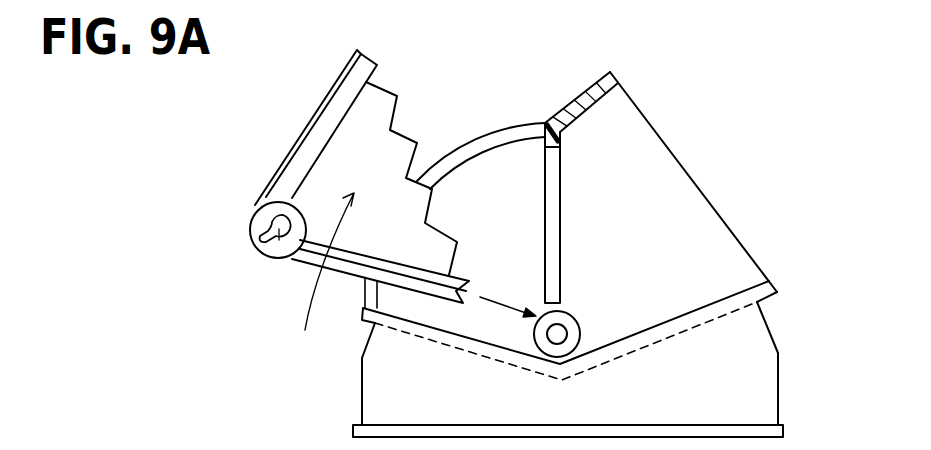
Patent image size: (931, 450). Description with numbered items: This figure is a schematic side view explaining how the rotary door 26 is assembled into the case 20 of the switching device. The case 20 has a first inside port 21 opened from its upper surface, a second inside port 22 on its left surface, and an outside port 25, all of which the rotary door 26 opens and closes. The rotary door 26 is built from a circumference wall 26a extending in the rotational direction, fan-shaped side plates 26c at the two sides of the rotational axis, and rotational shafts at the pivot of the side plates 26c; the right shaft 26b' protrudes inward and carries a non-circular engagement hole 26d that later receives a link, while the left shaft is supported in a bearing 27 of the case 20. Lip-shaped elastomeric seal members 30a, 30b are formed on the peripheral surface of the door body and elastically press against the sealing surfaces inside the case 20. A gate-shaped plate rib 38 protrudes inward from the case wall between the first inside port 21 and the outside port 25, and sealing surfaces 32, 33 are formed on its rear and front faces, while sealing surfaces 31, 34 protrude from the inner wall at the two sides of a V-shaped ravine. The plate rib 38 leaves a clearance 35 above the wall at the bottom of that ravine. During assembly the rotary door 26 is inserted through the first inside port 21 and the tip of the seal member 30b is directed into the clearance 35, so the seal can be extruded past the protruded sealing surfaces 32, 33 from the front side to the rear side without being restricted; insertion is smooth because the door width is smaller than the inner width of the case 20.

The case 20 is at (580, 96).
The first inside port 21 is at (453, 142).
The second inside port 22 is at (490, 193).
The outside port 25 is at (690, 174).
The rotary door 26 is at (307, 258).
The circumference wall 26a is at (413, 100).
The right shaft 26b' is at (249, 207).
The side plates 26c is at (362, 217).
The engagement hole 26d is at (259, 250).
The bearing 27 is at (580, 332).
The seal member 30a is at (310, 118).
The seal member 30b is at (341, 272).
The sealing surface 31 is at (479, 338).
The sealing surface 32 is at (545, 187).
The sealing surface 33 is at (560, 200).
The sealing surface 34 is at (689, 315).
The clearance 35 is at (558, 307).
The plate rib 38 is at (560, 258).